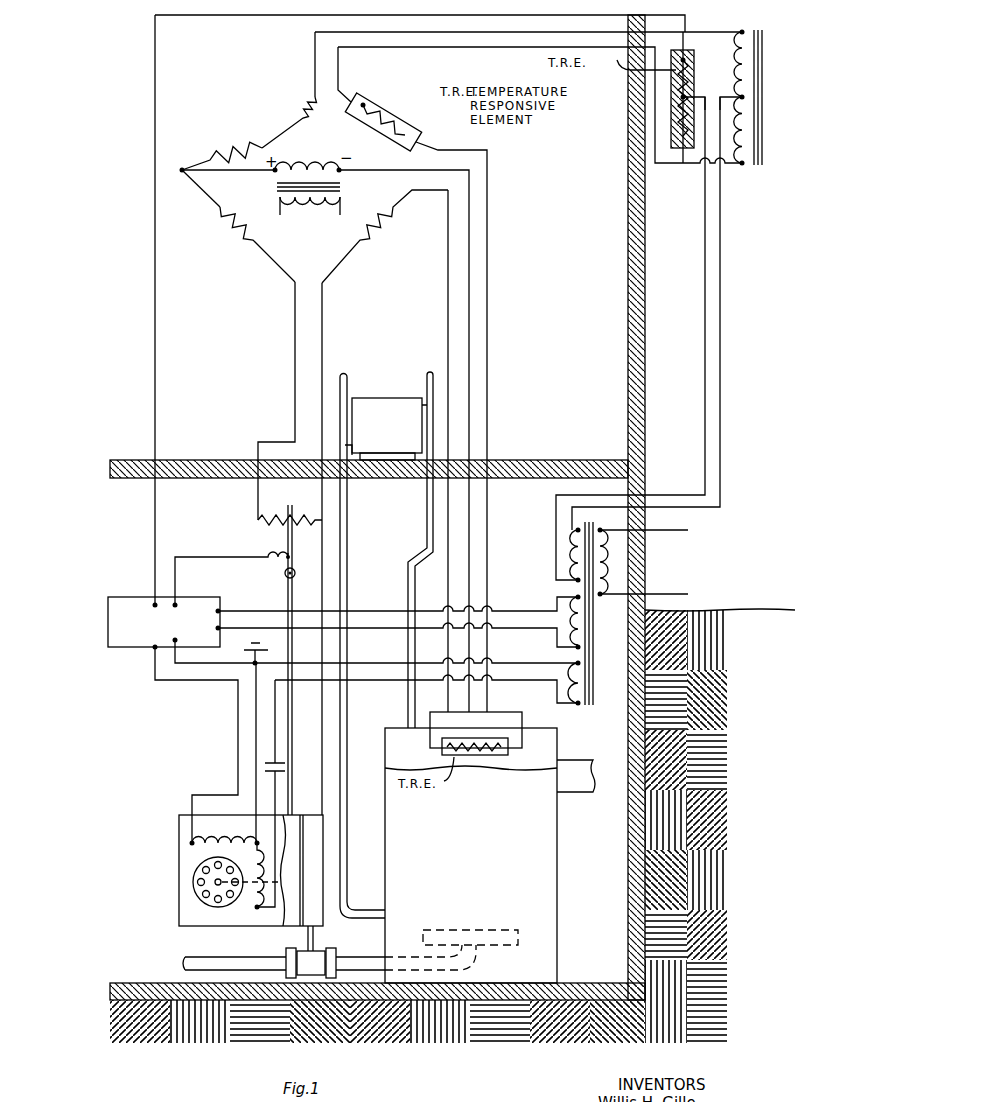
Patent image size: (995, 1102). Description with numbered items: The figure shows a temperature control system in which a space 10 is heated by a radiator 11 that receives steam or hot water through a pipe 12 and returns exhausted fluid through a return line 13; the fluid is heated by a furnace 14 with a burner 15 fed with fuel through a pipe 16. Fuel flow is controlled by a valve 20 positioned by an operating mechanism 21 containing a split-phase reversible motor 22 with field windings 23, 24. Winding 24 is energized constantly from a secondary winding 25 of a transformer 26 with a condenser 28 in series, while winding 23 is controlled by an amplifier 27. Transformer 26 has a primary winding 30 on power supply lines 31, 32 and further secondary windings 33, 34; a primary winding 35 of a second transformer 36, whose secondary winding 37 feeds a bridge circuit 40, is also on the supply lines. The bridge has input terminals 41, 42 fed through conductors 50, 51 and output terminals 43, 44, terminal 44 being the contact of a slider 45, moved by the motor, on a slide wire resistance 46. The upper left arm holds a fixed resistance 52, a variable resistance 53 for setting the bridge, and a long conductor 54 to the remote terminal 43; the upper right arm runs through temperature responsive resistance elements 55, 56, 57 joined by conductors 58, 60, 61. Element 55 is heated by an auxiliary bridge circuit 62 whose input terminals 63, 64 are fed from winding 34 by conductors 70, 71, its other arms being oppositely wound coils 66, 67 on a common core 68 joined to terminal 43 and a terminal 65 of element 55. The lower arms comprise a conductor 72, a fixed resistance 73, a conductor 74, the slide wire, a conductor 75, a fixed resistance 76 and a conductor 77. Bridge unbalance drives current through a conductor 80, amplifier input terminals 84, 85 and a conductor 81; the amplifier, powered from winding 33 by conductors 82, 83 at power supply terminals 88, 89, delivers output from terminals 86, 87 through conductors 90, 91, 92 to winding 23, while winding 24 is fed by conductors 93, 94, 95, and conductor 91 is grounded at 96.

The space 10 is at (573, 318).
The radiator 11 is at (374, 396).
The pipe 12 is at (426, 513).
The return line 13 is at (349, 512).
The furnace 14 is at (559, 843).
The burner 15 is at (494, 922).
The pipe 16 is at (372, 952).
The valve 20 is at (291, 948).
The operating mechanism 21 is at (320, 816).
The reversible motor 22 is at (211, 901).
The field winding 23 is at (234, 839).
The field winding 24 is at (254, 897).
The secondary winding 25 is at (566, 676).
The transformer 26 is at (591, 708).
The amplifier 27 is at (106, 635).
The condenser 28 is at (265, 763).
The primary winding 30 is at (606, 561).
The power supply line 31 is at (675, 544).
The power supply line 32 is at (680, 582).
The secondary winding 33 is at (560, 623).
The secondary winding 34 is at (568, 553).
The transformer primary winding 35 is at (306, 214).
The transformer 36 is at (343, 189).
The secondary winding 37 is at (307, 156).
The bridge circuit 40 is at (380, 161).
The input terminal 41 is at (182, 170).
The input terminal 42 is at (450, 710).
The output terminal 43 is at (690, 30).
The output terminal 44 is at (288, 519).
The slider 45 is at (298, 540).
The slide wire resistance 46 is at (280, 512).
The conductor 50 is at (230, 172).
The conductor 51 is at (427, 168).
The fixed resistance 52 is at (248, 138).
The variable resistance 53 is at (305, 104).
The conductor 54 is at (313, 50).
The temperature responsive resistance element 55 is at (688, 58).
The temperature responsive resistance element 56 is at (370, 94).
The temperature responsive resistance element 57 is at (492, 762).
The conductor 58 is at (530, 48).
The conductor 60 is at (489, 280).
The conductor 61 is at (437, 718).
The auxiliary bridge circuit 62 is at (727, 74).
The input terminal 63 is at (690, 100).
The input terminal 64 is at (748, 97).
The terminal 65 is at (683, 166).
The coil 66 is at (752, 64).
The coil 67 is at (752, 136).
The common core 68 is at (758, 170).
The conductor 70 is at (703, 302).
The conductor 71 is at (722, 302).
The conductor 72 is at (203, 190).
The fixed resistance 73 is at (234, 233).
The conductor 74 is at (293, 358).
The conductor 75 is at (324, 345).
The fixed resistance 76 is at (378, 225).
The conductor 77 is at (446, 327).
The conductor 80 is at (223, 560).
The conductor 81 is at (157, 500).
The conductor 82 is at (383, 598).
The conductor 83 is at (380, 628).
The amplifier input terminal 84 is at (178, 603).
The amplifier input terminal 85 is at (152, 603).
The output terminal 86 is at (180, 646).
The output terminal 87 is at (148, 652).
The power supply terminal 88 is at (222, 608).
The power supply terminal 89 is at (222, 627).
The conductor 90 is at (230, 660).
The conductor 91 is at (255, 727).
The conductor 92 is at (237, 706).
The conductor 93 is at (378, 660).
The conductor 94 is at (278, 786).
The conductor 95 is at (370, 686).
The ground 96 is at (265, 649).